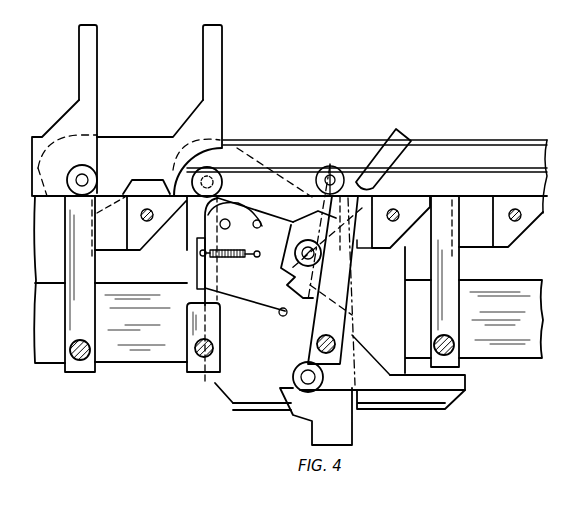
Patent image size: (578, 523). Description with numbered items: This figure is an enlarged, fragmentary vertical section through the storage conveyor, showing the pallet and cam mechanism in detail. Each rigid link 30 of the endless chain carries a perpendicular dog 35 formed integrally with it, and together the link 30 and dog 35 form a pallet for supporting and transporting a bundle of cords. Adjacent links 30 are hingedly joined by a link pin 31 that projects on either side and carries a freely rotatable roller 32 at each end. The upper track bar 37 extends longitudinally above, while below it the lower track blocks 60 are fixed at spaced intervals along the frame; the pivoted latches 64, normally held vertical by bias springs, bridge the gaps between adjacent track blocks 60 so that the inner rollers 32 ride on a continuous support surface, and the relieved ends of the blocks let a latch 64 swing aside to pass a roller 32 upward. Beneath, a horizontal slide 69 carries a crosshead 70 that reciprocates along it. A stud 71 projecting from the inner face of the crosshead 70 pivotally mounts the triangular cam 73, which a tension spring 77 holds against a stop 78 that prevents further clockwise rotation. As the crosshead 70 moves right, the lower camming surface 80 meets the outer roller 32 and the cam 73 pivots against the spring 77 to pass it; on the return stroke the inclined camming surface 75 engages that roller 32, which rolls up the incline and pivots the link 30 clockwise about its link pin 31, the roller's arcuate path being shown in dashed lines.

The link 30 is at (93, 123).
The link pin 31 is at (85, 180).
The roller 32 is at (72, 174).
The dog 35 is at (206, 48).
The upper track bar 37 is at (345, 148).
The lower track block 60 is at (147, 235).
The latch 64 is at (93, 268).
The slide 69 is at (495, 355).
The crosshead 70 is at (212, 383).
The stud 71 is at (243, 213).
The cam 73 is at (251, 295).
The inclined camming surface 75 is at (258, 228).
The tension spring 77 is at (230, 271).
The stop 78 is at (199, 281).
The lower camming surface 80 is at (284, 308).